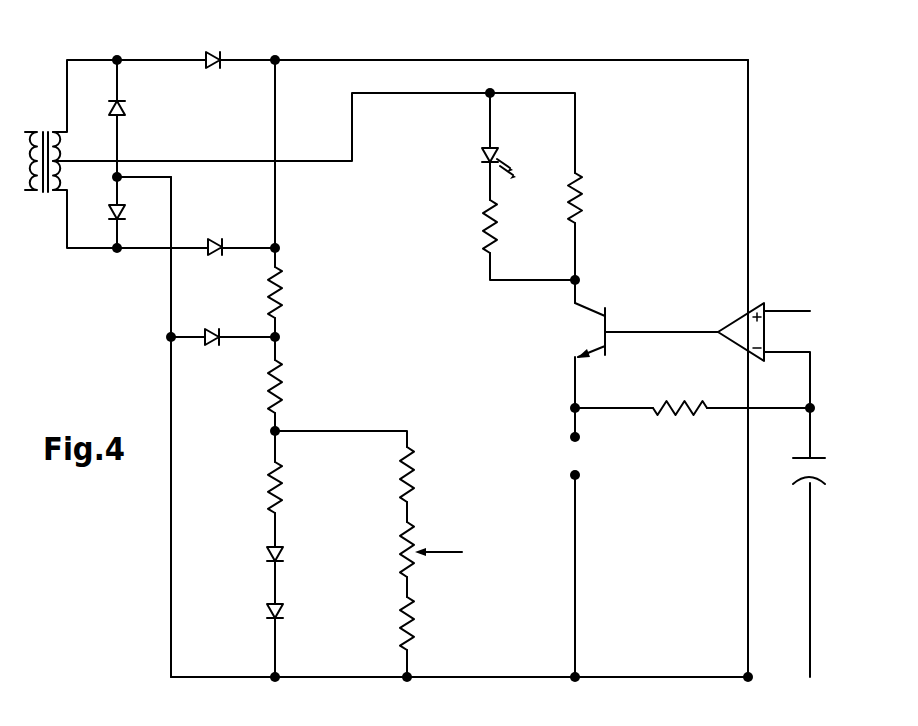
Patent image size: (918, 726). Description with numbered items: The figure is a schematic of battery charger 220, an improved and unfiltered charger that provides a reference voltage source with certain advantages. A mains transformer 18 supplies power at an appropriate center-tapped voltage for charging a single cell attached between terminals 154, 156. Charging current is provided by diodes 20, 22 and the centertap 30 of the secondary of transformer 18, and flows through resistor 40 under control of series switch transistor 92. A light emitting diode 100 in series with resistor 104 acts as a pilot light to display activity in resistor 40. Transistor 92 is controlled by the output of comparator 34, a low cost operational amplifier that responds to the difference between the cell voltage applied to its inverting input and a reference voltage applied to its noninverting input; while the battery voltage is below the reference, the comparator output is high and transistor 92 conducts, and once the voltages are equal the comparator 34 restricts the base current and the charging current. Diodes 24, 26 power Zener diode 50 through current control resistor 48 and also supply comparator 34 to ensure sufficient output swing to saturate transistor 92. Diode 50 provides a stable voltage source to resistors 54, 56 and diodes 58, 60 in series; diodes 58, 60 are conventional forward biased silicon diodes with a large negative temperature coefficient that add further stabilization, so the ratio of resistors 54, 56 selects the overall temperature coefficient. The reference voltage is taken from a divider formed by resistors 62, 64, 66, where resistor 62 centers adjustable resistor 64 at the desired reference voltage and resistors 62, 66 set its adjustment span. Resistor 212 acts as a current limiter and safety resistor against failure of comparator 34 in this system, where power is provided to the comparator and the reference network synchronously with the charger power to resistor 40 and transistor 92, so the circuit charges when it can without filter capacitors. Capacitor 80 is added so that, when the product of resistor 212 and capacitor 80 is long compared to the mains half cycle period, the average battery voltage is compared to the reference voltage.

The mains transformer 18 is at (47, 193).
The diode 20 is at (127, 109).
The diode 22 is at (110, 212).
The diode 24 is at (212, 52).
The diode 26 is at (217, 256).
The centertap 30 is at (172, 535).
The comparator 34 is at (738, 348).
The resistor 40 is at (580, 217).
The current control resistor 48 is at (285, 301).
The Zener diode 50 is at (222, 343).
The resistor 54 is at (288, 391).
The resistor 56 is at (268, 483).
The diode 58 is at (267, 553).
The diode 60 is at (267, 613).
The resistor 62 is at (411, 474).
The resistor 64 is at (398, 555).
The resistor 66 is at (413, 640).
The capacitor 80 is at (803, 481).
The transistor 92 is at (587, 317).
The light emitting diode 100 is at (483, 158).
The resistor 104 is at (487, 228).
The terminal 154 is at (570, 443).
The terminal 156 is at (570, 473).
The resistor 212 is at (680, 420).
The battery charger 220 is at (767, 92).